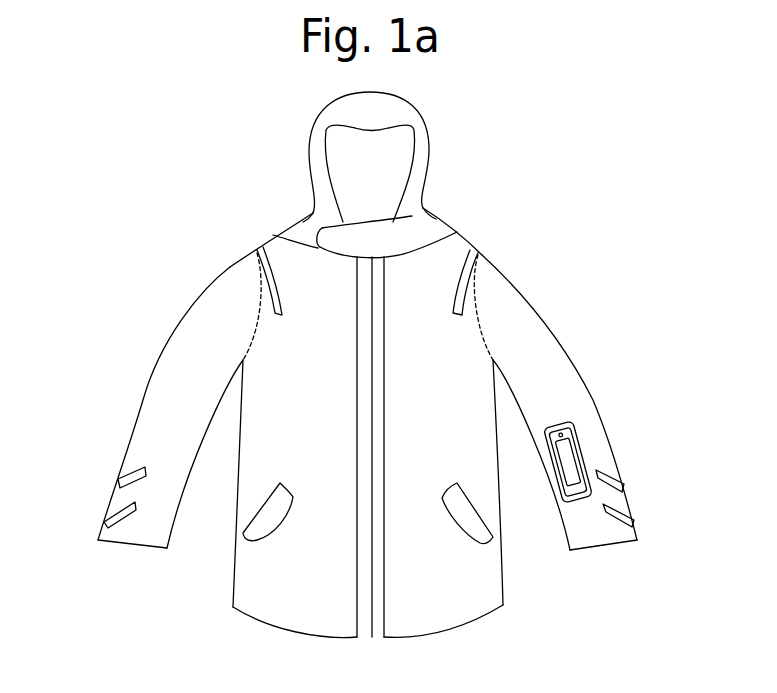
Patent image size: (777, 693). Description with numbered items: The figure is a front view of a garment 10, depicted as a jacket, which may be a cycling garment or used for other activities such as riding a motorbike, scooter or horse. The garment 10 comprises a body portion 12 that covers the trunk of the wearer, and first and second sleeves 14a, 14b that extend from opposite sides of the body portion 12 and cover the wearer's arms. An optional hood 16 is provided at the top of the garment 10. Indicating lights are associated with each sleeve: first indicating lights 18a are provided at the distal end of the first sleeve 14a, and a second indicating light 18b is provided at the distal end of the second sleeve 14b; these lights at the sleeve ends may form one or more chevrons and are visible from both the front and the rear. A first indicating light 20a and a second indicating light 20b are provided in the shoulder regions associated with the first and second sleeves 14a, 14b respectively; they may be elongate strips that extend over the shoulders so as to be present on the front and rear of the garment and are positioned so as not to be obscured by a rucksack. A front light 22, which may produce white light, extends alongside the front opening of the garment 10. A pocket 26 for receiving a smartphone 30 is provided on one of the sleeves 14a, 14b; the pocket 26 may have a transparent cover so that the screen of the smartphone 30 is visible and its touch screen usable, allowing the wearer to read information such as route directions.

The garment 10 is at (247, 203).
The body portion 12 is at (278, 600).
The first sleeve 14a is at (153, 420).
The second sleeve 14b is at (545, 347).
The hood 16 is at (397, 112).
The first indicating lights 18a is at (110, 520).
The second indicating light 18b is at (610, 508).
The first indicating light 20a is at (270, 278).
The second indicating light 20b is at (465, 268).
The front light 22 is at (378, 593).
The pocket 26 is at (587, 497).
The smartphone 30 is at (567, 452).